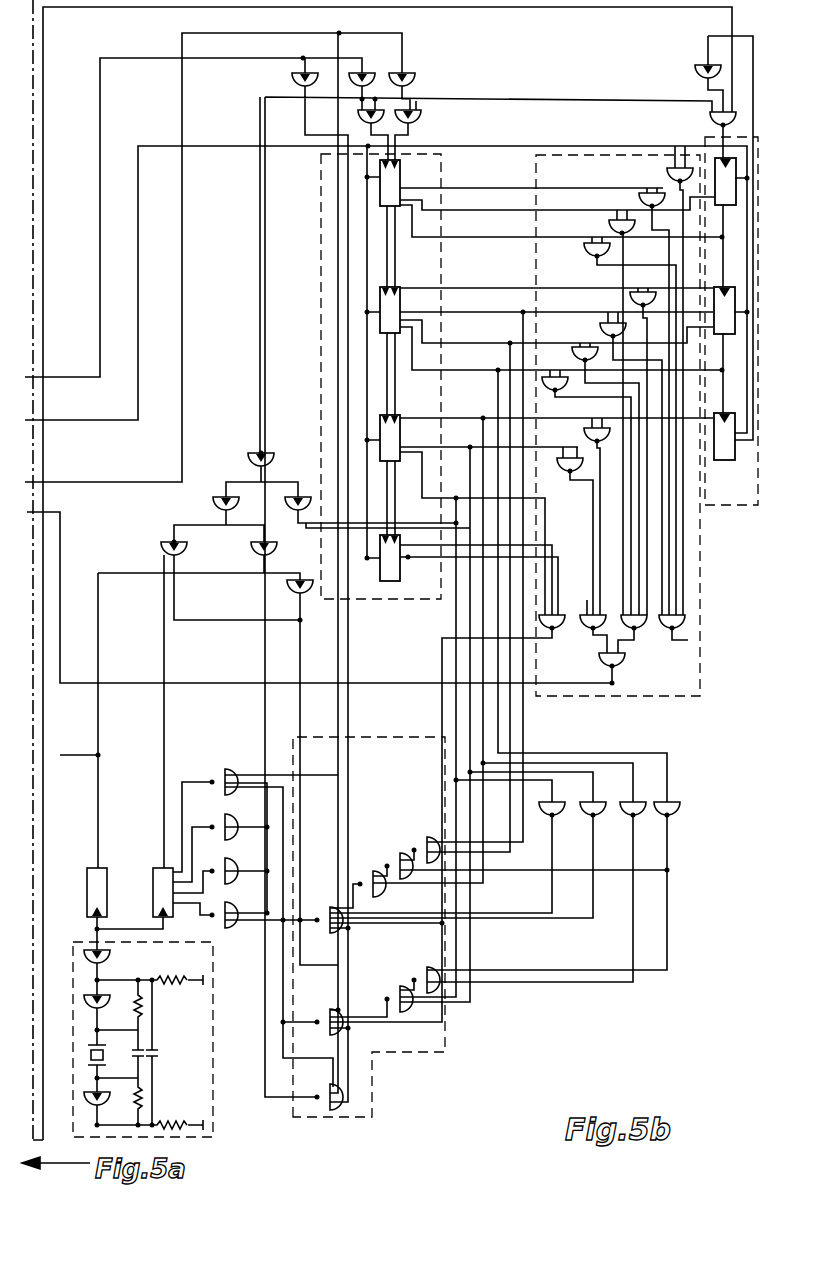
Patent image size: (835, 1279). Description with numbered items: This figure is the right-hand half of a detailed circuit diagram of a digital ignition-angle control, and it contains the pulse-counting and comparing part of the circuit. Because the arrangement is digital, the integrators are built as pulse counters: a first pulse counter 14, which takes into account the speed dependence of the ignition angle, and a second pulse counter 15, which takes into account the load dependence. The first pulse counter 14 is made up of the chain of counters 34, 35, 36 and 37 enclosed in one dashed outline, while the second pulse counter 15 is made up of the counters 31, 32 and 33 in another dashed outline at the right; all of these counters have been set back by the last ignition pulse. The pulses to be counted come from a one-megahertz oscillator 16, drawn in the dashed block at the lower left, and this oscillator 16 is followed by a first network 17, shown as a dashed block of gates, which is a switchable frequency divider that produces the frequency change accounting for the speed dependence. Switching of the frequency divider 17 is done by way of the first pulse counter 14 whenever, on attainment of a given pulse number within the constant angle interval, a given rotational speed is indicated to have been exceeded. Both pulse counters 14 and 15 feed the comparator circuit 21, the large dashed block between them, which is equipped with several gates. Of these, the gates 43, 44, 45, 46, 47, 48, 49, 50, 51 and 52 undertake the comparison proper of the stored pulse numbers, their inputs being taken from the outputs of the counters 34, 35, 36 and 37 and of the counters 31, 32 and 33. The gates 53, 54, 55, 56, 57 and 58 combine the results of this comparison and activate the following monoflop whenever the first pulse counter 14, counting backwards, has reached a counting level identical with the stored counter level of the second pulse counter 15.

The first pulse counter 14 is at (330, 190).
The second pulse counter 15 is at (731, 505).
The oscillator 16 is at (210, 1038).
The first network 17 is at (440, 1038).
The comparator circuit 21 is at (695, 568).
The counter 31 is at (735, 202).
The counter 32 is at (735, 331).
The counter 33 is at (735, 457).
The counter 34 is at (400, 180).
The counter 35 is at (400, 305).
The counter 36 is at (400, 435).
The counter 37 is at (400, 565).
The gate 43 is at (596, 237).
The gate 44 is at (623, 215).
The gate 45 is at (651, 189).
The gate 46 is at (681, 166).
The gate 47 is at (557, 370).
The gate 48 is at (585, 341).
The gate 49 is at (614, 316).
The gate 50 is at (644, 286).
The gate 51 is at (570, 448).
The gate 52 is at (599, 421).
The gate 53 is at (563, 614).
The gate 54 is at (600, 617).
The gate 55 is at (630, 640).
The gate 56 is at (676, 633).
The gate 57 is at (614, 668).
The gate 58 is at (709, 118).